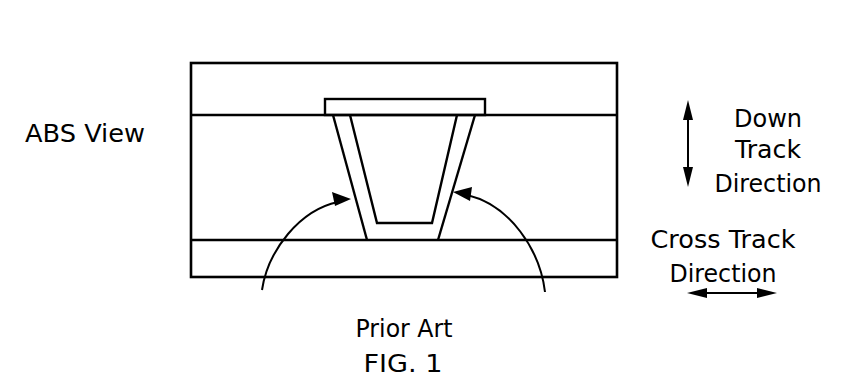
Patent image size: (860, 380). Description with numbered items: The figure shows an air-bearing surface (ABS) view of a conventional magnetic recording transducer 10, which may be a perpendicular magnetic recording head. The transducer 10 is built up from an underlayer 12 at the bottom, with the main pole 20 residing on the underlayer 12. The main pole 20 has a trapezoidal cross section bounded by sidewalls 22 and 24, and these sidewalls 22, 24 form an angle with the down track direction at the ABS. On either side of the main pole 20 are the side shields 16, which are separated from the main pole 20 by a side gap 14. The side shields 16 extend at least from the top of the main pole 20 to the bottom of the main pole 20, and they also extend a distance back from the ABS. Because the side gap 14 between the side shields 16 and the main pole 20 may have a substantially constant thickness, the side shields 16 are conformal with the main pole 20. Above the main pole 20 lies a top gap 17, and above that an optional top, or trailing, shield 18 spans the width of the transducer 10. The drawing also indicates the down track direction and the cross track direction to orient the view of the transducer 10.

The magnetic recording transducer 10 is at (35, 56).
The underlayer 12 is at (404, 255).
The side gap 14 is at (337, 133).
The side shields 16 is at (403, 168).
The top gap 17 is at (355, 98).
The trailing shield 18 is at (617, 93).
The main pole 20 is at (403, 169).
The sidewall 22 is at (299, 258).
The sidewall 24 is at (506, 255).